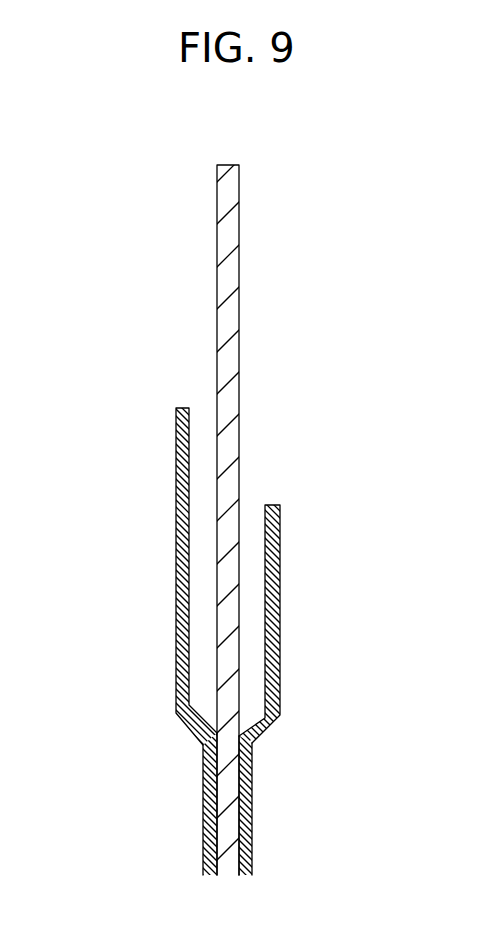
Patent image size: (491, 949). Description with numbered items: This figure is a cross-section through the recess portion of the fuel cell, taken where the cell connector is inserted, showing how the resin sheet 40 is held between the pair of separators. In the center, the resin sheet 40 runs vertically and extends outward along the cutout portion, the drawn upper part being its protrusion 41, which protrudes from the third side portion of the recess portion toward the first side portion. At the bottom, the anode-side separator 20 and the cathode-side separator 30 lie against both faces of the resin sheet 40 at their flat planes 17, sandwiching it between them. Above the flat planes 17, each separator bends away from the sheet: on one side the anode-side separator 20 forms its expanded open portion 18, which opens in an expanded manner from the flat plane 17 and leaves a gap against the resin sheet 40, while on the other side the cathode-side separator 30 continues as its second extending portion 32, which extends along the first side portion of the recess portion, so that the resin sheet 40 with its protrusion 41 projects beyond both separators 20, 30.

The resin sheet 40 is at (241, 228).
The protrusion 41 is at (245, 575).
The cathode-side separator 30 is at (245, 640).
The second extending portion 32 is at (176, 430).
The anode-side separator 20 is at (247, 690).
The expanded open portion 18 is at (281, 623).
The flat plane 17 is at (253, 821).